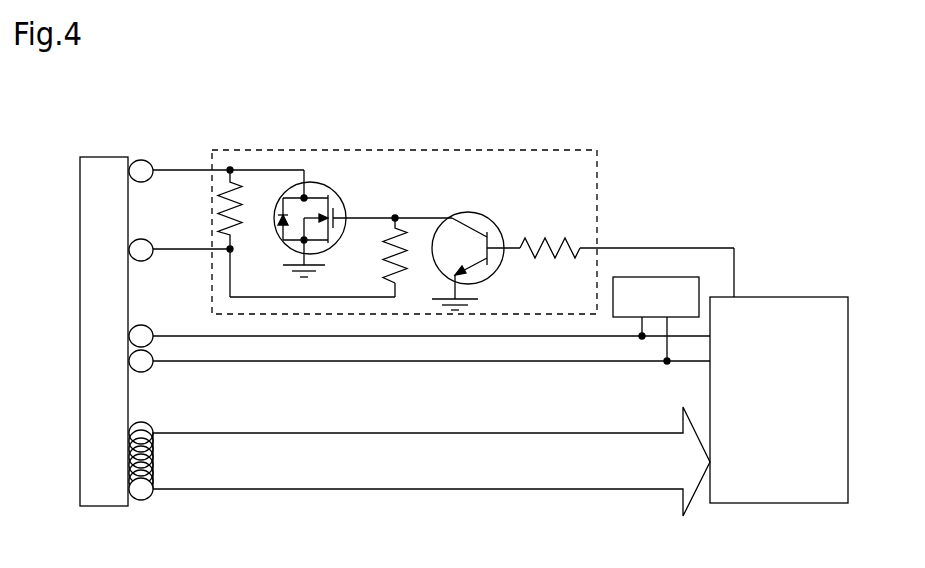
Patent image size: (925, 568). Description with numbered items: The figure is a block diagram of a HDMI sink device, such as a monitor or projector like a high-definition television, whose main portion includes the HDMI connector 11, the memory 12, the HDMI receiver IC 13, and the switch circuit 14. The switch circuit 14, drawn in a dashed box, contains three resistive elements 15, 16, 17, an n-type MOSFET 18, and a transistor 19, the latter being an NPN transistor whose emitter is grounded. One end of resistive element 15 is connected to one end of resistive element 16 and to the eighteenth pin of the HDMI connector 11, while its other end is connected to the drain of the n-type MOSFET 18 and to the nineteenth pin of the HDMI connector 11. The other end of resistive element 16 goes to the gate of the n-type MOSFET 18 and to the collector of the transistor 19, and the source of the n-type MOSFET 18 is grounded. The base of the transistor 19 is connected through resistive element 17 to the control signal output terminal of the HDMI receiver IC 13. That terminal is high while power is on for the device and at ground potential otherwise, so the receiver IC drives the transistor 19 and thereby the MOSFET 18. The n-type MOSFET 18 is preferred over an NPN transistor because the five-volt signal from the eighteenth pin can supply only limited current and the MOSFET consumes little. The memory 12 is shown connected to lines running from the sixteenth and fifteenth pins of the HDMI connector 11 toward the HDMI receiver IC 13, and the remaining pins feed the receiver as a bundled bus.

The HDMI connector 11 is at (98, 157).
The memory 12 is at (655, 277).
The HDMI receiver IC 13 is at (772, 297).
The switch circuit 14 is at (365, 150).
The resistive element 15 is at (215, 203).
The resistive element 16 is at (383, 255).
The resistive element 17 is at (562, 235).
The n-type MOSFET 18 is at (340, 193).
The transistor 19 is at (477, 215).